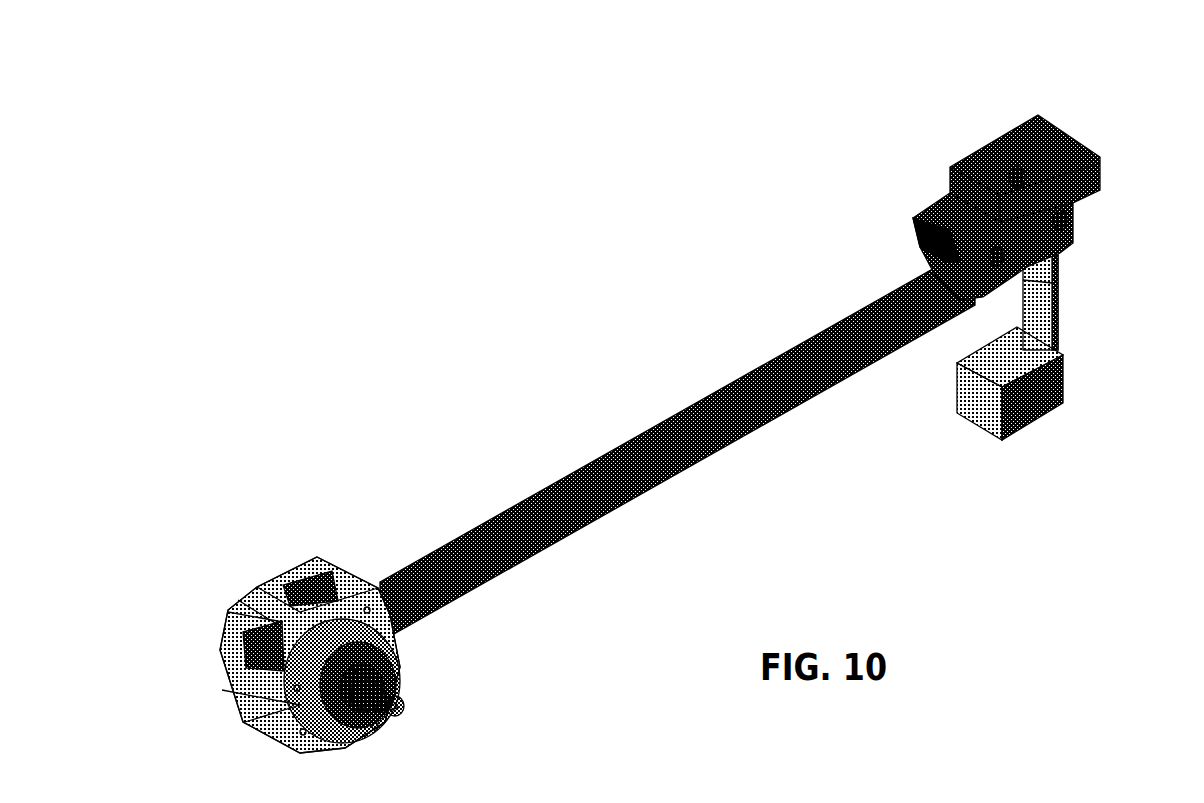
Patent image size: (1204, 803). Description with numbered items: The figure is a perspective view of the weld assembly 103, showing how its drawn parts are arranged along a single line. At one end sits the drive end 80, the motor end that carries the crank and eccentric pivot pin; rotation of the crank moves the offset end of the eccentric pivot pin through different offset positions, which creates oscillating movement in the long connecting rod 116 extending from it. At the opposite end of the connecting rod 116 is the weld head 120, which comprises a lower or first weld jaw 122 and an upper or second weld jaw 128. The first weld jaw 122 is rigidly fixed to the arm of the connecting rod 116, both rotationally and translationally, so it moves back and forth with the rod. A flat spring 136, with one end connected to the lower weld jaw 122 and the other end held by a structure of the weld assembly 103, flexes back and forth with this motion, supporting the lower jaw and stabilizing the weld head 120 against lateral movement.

The drive end 80 is at (246, 535).
The weld assembly 103 is at (538, 342).
The connecting rod 116 is at (493, 518).
The weld head 120 is at (1112, 98).
The first weld jaw 122 is at (947, 258).
The second weld jaw 128 is at (913, 220).
The flat spring 136 is at (1058, 283).